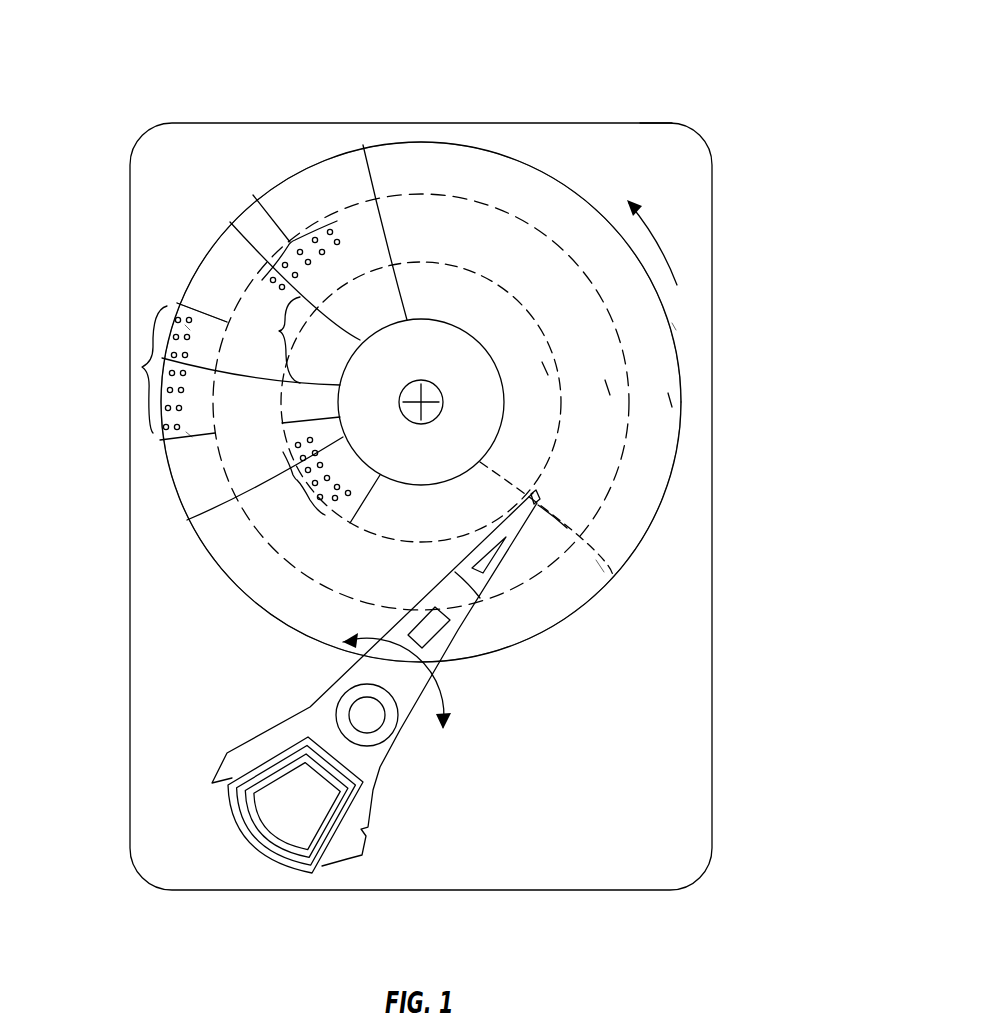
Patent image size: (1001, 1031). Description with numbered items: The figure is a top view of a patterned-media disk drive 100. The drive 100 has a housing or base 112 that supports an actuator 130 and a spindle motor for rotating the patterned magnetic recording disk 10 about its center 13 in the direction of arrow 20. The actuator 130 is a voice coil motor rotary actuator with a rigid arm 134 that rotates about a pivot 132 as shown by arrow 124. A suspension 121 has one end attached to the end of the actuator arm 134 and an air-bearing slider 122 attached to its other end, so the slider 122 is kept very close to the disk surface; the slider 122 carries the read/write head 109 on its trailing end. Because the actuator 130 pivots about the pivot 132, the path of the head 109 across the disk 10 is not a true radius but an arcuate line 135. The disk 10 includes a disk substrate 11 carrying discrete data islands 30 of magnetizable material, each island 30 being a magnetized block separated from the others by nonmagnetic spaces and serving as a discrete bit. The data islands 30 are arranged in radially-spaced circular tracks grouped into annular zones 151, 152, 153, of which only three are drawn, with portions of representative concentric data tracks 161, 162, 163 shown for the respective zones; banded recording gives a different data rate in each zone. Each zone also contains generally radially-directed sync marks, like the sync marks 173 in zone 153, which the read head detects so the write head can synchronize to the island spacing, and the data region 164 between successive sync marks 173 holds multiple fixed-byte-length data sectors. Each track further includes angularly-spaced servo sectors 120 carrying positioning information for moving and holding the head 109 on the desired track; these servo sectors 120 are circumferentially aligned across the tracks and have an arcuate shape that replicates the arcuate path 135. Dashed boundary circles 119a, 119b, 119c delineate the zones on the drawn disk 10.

The patterned-media disk drive 100 is at (131, 46).
The housing or base 112 is at (640, 123).
The patterned magnetic recording disk 10 is at (297, 193).
The servo sectors 120 is at (372, 174).
The outer zone 119c is at (553, 177).
The middle zone 119b is at (468, 205).
The inner zone 119a is at (442, 272).
The arrow 20 is at (652, 232).
The data track 162 is at (253, 195).
The sync marks 173 is at (187, 327).
The data region 164 is at (177, 302).
The disk substrate 11 is at (672, 323).
The data islands 30 is at (308, 262).
The zone 151 is at (545, 368).
The data track 163 is at (140, 367).
The zone 152 is at (607, 387).
The zone 153 is at (670, 400).
The center 13 is at (437, 392).
The read/write head 109 is at (537, 497).
The data track 161 is at (319, 470).
The air-bearing slider 122 is at (583, 534).
The suspension 121 is at (462, 568).
The arcuate line 135 is at (603, 562).
The rigid arm 134 is at (423, 605).
The arrow 124 is at (440, 697).
The pivot 132 is at (360, 710).
The actuator 130 is at (225, 760).